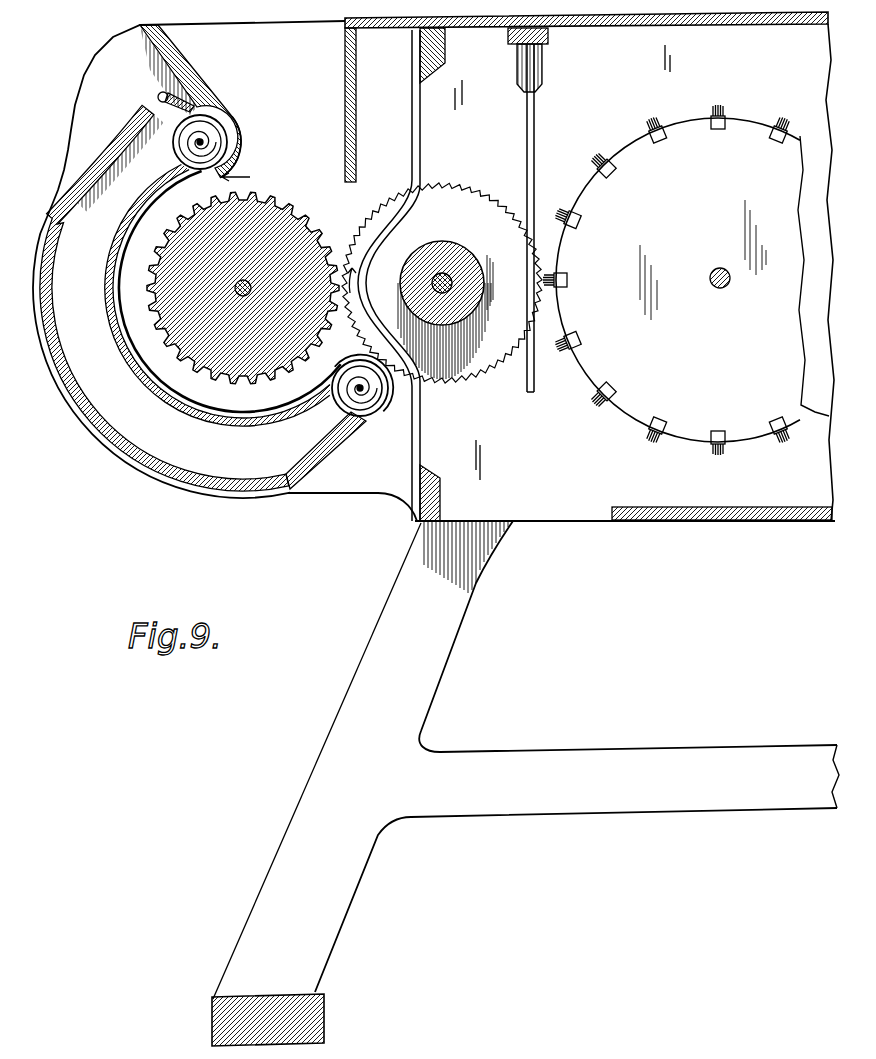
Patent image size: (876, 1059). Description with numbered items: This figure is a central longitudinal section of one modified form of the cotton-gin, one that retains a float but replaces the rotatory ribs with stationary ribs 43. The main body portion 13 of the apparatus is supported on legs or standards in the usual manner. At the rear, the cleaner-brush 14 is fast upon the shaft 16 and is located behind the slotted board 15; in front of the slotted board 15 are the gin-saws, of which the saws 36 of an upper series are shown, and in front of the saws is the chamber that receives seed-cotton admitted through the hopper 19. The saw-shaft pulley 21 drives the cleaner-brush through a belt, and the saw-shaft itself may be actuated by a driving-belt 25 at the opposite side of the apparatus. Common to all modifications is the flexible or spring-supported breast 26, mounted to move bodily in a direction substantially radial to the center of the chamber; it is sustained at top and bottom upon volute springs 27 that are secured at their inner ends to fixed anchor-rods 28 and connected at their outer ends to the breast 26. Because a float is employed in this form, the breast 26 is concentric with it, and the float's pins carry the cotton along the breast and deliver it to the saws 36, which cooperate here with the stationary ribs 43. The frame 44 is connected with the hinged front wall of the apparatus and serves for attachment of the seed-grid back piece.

The main body portion 13 is at (745, 54).
The cleaner-brush 14 is at (671, 280).
The slotted board 15 is at (536, 145).
The shaft 16 is at (714, 271).
The hopper 19 is at (351, 271).
The saw-shaft pulley 21 is at (186, 136).
The driving-belt 25 is at (258, 200).
The spring-supported breast 26 is at (117, 297).
The volute springs 27 is at (368, 418).
The anchor-rods 28 is at (197, 153).
The saws of an upper series 36 is at (442, 283).
The stationary ribs 43 is at (421, 151).
The frame 44 is at (214, 296).